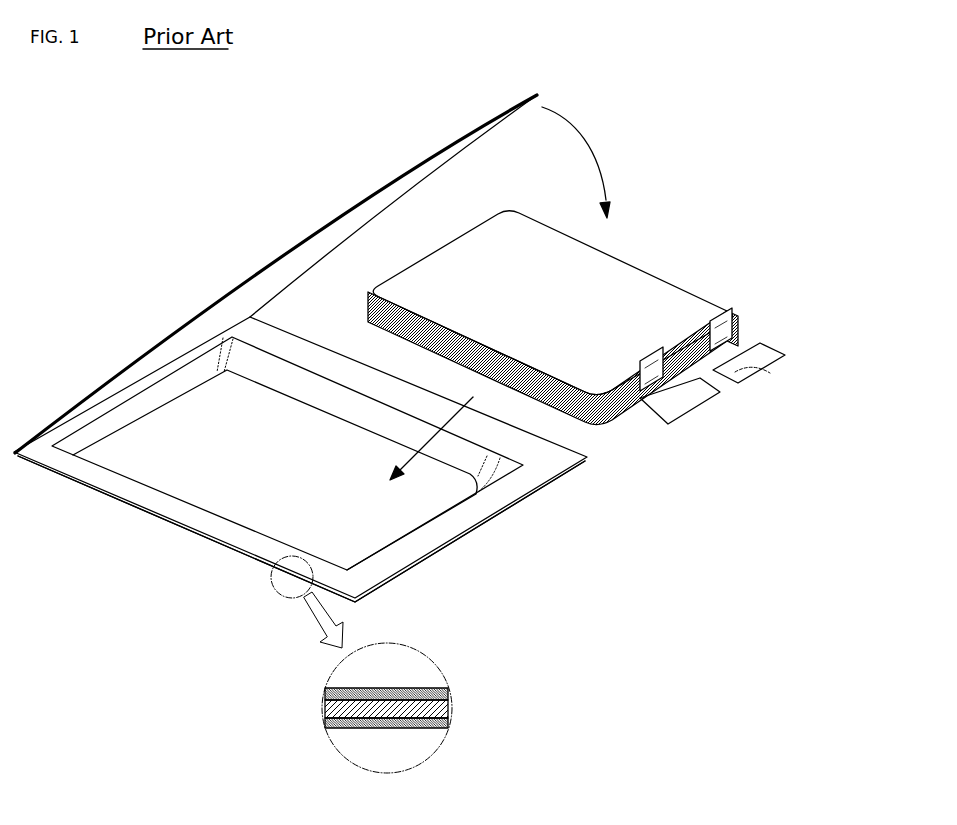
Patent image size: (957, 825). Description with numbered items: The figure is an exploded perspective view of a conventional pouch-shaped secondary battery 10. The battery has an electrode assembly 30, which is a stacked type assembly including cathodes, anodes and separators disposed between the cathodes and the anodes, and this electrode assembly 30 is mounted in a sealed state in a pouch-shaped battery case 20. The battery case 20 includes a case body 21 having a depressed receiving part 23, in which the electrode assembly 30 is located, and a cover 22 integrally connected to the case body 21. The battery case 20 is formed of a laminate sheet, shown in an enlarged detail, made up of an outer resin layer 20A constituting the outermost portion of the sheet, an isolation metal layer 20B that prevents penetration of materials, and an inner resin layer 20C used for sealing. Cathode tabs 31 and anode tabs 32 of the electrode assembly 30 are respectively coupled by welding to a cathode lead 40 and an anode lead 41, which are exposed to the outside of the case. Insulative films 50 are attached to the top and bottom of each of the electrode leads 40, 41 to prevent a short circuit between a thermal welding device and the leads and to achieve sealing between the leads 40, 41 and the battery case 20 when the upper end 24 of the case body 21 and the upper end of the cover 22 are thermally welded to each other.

The pouch-shaped secondary battery 10 is at (84, 146).
The pouch-shaped battery case 20 is at (312, 372).
The case body 21 is at (213, 545).
The cover 22 is at (338, 219).
The depressed receiving part 23 is at (160, 465).
The upper end of the case body 24 is at (468, 508).
The outer resin layer 20A is at (440, 727).
The isolation metal layer 20B is at (448, 708).
The inner resin layer 20C is at (440, 690).
The electrode assembly 30 is at (593, 335).
The cathode tabs 31 is at (720, 344).
The anode tabs 32 is at (647, 378).
The cathode lead 40 is at (777, 363).
The anode lead 41 is at (688, 410).
The insulative films 50 is at (735, 371).